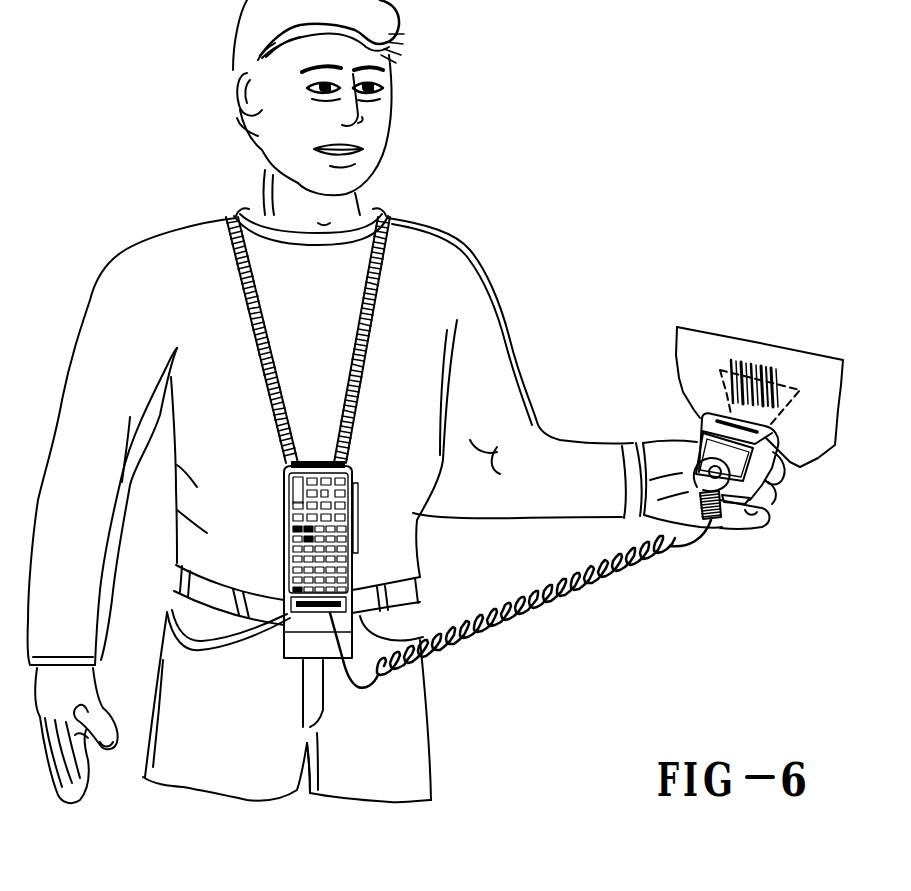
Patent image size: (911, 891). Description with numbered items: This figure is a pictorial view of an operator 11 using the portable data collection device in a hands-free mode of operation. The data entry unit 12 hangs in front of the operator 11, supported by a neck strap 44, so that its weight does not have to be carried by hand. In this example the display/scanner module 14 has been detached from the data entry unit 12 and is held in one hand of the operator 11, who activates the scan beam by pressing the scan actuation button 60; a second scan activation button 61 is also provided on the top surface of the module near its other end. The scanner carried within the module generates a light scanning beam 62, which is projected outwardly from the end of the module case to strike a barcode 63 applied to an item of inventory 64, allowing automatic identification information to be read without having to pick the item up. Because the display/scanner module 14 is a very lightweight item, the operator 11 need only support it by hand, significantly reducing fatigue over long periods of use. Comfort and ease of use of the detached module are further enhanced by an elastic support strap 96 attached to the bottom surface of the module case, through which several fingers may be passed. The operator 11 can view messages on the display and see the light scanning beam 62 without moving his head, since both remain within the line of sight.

The operator 11 is at (478, 272).
The data entry unit 12 is at (350, 569).
The display/scanner module 14 is at (700, 434).
The neck strap 44 is at (387, 215).
The scan activation button 60 is at (752, 495).
The scan activation button 61 is at (728, 482).
The light scanning beam 62 is at (716, 384).
The barcode 63 is at (731, 360).
The item of inventory 64 is at (803, 377).
The elastic support strap 96 is at (711, 525).